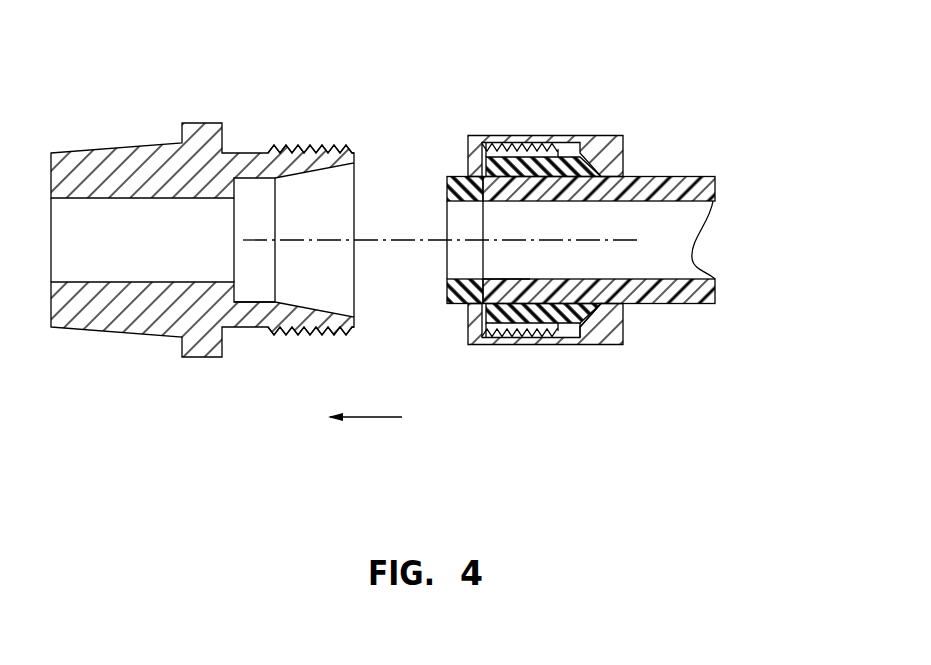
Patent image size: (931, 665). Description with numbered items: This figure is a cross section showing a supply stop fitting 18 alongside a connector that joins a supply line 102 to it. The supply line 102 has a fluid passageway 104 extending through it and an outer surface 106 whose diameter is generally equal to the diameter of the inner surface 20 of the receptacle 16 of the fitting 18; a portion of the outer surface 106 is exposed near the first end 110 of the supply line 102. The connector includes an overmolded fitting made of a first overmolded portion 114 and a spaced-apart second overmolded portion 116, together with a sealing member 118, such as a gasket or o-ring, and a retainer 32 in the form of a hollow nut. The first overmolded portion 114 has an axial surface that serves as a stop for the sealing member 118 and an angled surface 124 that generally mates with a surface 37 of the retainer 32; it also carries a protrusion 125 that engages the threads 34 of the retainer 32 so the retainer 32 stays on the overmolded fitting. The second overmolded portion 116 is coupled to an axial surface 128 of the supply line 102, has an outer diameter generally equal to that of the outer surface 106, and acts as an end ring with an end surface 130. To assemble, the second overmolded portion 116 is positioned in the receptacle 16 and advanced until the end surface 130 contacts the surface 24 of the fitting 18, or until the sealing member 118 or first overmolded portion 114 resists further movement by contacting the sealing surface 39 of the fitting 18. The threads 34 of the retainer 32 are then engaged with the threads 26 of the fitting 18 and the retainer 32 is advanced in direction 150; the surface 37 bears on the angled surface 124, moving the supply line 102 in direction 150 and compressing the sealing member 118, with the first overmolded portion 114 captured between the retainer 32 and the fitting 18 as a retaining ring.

The receptacle 16 is at (333, 198).
The fitting 18 is at (130, 137).
The inner surface 20 is at (260, 303).
The surface 24 is at (239, 183).
The threads 26 is at (308, 147).
The retainer 32 is at (622, 137).
The threads 34 is at (523, 328).
The surface 37 is at (588, 312).
The sealing surface 39 is at (313, 303).
The supply line 102 is at (717, 175).
The fluid passageway 104 is at (685, 228).
The outer surface 106 is at (692, 307).
The first end 110 is at (496, 277).
The first overmolded portion 114 is at (557, 157).
The second overmolded portion 116 is at (446, 176).
The sealing member 118 is at (507, 157).
The angled surface 124 is at (567, 318).
The protrusion 125 is at (567, 320).
The axial surface 128 is at (489, 318).
The end surface 130 is at (446, 186).
The direction 150 is at (375, 418).